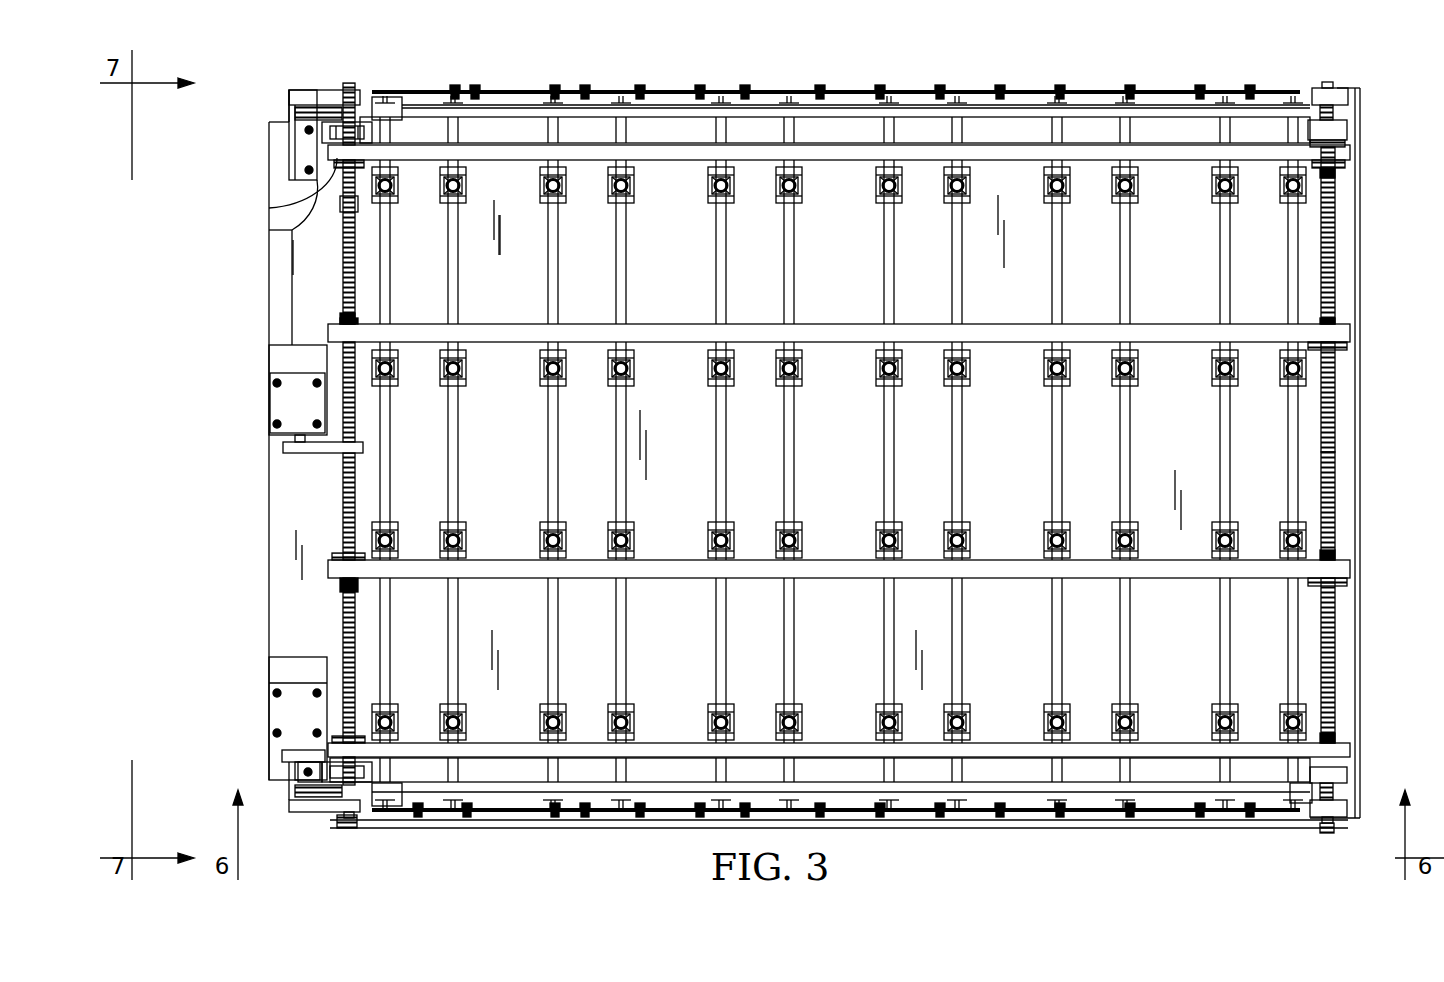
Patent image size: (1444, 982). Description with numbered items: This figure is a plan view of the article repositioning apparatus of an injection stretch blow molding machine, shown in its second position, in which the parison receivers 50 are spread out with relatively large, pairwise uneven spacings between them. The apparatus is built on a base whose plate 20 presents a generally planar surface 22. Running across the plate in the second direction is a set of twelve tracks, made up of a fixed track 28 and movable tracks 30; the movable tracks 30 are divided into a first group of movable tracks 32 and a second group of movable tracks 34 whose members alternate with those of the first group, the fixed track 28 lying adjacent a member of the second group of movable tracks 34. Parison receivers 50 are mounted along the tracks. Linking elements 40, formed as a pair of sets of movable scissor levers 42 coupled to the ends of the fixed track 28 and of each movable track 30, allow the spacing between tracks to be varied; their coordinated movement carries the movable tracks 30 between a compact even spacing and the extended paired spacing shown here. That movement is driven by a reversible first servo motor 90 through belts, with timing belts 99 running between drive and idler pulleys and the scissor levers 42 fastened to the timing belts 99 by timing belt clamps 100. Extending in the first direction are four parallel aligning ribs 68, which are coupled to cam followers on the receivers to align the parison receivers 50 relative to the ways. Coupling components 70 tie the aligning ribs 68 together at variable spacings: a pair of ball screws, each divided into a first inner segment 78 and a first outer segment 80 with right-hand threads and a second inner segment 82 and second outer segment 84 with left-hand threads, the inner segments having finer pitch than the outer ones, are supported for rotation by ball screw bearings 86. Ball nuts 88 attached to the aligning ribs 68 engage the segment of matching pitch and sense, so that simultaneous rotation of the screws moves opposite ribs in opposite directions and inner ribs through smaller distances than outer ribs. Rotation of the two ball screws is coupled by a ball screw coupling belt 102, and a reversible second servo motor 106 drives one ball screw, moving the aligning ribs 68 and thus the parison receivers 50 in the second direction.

The plate 20 is at (289, 118).
The generally planar surface 22 is at (278, 152).
The fixed track 28 is at (1290, 285).
The movable tracks 30 is at (453, 285).
The first group of movable tracks 32 is at (455, 592).
The second group of movable tracks 34 is at (385, 435).
The linking elements 40 is at (668, 80).
The movable scissor levers 42 is at (833, 90).
The parison receivers 50 is at (839, 373).
The aligning ribs 68 is at (332, 168).
The coupling components 70 is at (1352, 357).
The first inner segment 78 is at (340, 378).
The first outer segment 80 is at (333, 240).
The second inner segment 82 is at (340, 490).
The second outer segment 84 is at (340, 625).
The ball screw bearings 86 is at (1316, 62).
The ball nuts 88 is at (336, 200).
The first servo motor 90 is at (290, 720).
The timing belt 99 is at (1003, 106).
The timing belt clamps 100 is at (387, 108).
The ball screw coupling belt 102 is at (1128, 826).
The second servo motor 106 is at (292, 398).